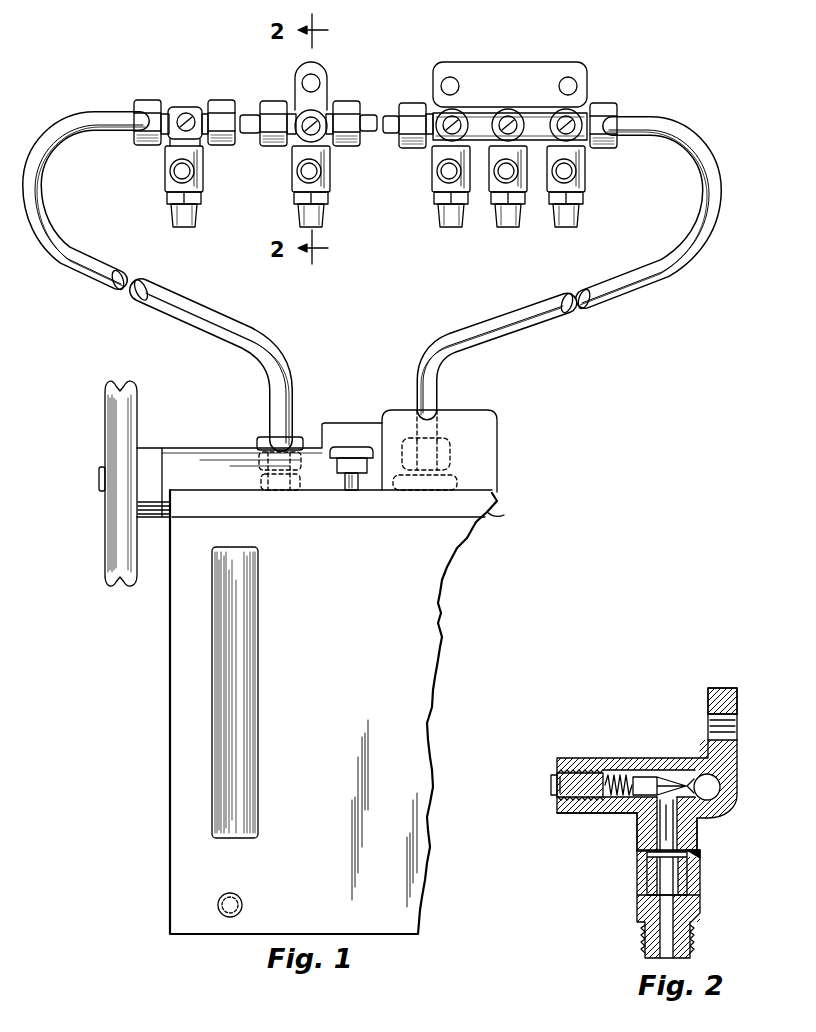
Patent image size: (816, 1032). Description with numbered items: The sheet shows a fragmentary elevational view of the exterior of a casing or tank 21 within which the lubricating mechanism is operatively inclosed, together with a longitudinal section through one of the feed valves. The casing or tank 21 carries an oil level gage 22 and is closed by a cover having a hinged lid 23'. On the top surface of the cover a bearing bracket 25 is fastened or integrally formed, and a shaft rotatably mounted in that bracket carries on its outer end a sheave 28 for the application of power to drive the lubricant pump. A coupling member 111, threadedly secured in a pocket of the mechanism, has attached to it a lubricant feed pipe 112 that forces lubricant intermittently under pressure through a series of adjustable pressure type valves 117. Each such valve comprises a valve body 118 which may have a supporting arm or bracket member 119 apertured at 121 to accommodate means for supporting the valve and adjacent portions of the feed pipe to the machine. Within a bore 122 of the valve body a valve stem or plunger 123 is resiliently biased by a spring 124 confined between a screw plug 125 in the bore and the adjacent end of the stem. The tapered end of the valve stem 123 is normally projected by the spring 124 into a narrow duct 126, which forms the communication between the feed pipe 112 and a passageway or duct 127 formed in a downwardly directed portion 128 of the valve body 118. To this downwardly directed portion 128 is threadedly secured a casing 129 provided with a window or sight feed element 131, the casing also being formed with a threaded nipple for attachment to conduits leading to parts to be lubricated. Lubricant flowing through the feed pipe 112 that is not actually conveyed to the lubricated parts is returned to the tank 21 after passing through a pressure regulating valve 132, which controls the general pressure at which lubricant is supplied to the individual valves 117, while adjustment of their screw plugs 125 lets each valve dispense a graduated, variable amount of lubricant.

In FIG. 1, the casing or tank 21 is at (169, 681).
In FIG. 1, the oil level gage 22 is at (222, 727).
In FIG. 1, the hinged lid 23' is at (457, 445).
In FIG. 1, the bearing bracket 25 is at (221, 448).
In FIG. 1, the sheave 28 is at (137, 396).
In FIG. 1, the coupling member 111 is at (258, 482).
In FIG. 1, the lubricant feed pipe 112 is at (284, 362).
In FIG. 1, the adjustable pressure type valve 117 is at (292, 176).
In FIG. 2, the adjustable pressure type valve 117 is at (637, 756).
In FIG. 2, the valve body 118 is at (588, 815).
In FIG. 2, the supporting arm or bracket member 119 is at (709, 690).
In FIG. 2, the aperture 121 is at (730, 731).
In FIG. 2, the bore 122 is at (605, 770).
In FIG. 2, the valve stem or plunger 123 is at (653, 774).
In FIG. 2, the spring 124 is at (617, 797).
In FIG. 2, the screw plug 125 is at (553, 788).
In FIG. 2, the narrow duct 126 is at (724, 796).
In FIG. 2, the passageway or duct 127 is at (662, 830).
In FIG. 2, the downwardly directed portion 128 is at (690, 826).
In FIG. 2, the casing 129 is at (701, 908).
In FIG. 2, the window or sight feed element 131 is at (648, 878).
In FIG. 1, the pressure regulating valve 132 is at (458, 483).